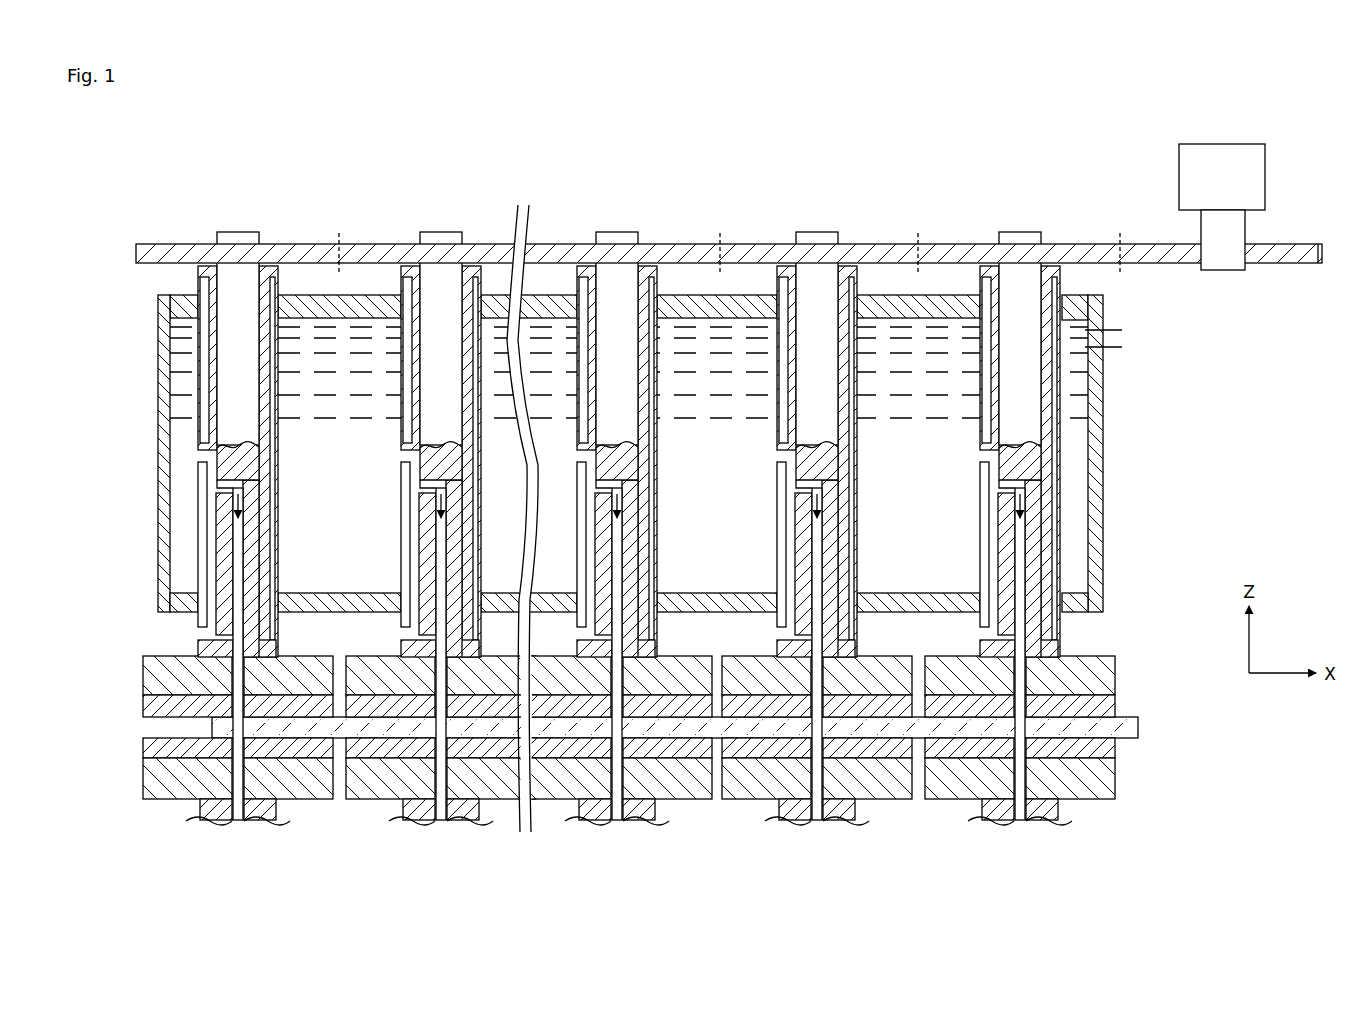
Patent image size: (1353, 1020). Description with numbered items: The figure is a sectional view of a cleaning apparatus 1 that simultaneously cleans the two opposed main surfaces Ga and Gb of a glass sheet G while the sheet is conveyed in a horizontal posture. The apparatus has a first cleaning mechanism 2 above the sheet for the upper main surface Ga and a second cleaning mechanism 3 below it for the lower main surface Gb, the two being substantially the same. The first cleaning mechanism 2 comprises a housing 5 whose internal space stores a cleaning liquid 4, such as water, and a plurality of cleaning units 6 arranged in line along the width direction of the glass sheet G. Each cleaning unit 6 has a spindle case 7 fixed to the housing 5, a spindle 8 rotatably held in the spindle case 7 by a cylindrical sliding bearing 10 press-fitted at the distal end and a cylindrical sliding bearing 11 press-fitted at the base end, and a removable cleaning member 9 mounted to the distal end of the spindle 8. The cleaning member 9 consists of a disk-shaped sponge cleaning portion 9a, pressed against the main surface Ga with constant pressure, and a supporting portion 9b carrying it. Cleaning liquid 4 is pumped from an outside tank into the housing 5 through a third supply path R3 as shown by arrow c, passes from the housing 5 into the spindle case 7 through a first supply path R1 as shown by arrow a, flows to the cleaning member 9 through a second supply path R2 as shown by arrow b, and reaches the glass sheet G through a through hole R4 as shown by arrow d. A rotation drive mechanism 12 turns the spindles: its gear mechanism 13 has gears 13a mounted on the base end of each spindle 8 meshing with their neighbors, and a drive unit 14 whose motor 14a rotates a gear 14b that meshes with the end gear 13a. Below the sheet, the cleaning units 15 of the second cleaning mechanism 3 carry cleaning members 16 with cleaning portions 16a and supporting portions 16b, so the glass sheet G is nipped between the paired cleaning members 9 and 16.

The cleaning apparatus 1 is at (975, 132).
The first cleaning mechanism 2 is at (1176, 428).
The second cleaning mechanism 3 is at (1204, 802).
The cleaning liquid 4 is at (1103, 464).
The housing 5 is at (1103, 400).
The cleaning unit 6 is at (231, 231).
The spindle case 7 is at (282, 441).
The spindle 8 is at (243, 240).
The cleaning member 9 is at (644, 637).
The cleaning portion 9a is at (146, 704).
The supporting portion 9b is at (146, 672).
The sliding bearing 10 is at (271, 592).
The sliding bearing 11 is at (200, 284).
The rotation drive mechanism 12 is at (1284, 232).
The gear mechanism 13 is at (729, 222).
The gear 13a is at (284, 246).
The drive unit 14 is at (1199, 186).
The motor 14a is at (1218, 157).
The gear 14b is at (1166, 246).
The cleaning unit 15 is at (250, 824).
The cleaning member 16 is at (632, 809).
The cleaning portion 16a is at (146, 744).
The supporting portion 16b is at (146, 774).
The first supply path R1 is at (207, 458).
The second supply path R2 is at (209, 558).
The third supply path R3 is at (1108, 336).
The through hole R4 is at (236, 658).
The arrow a is at (197, 451).
The arrow b is at (230, 505).
The arrow c is at (1128, 338).
The arrow d is at (289, 656).
The glass sheet G is at (705, 724).
The main surface Ga is at (1138, 718).
The main surface Gb is at (1138, 738).